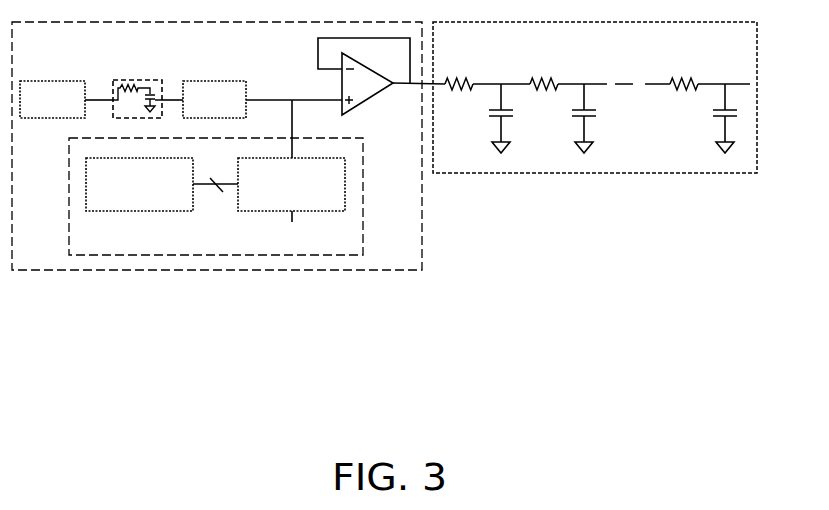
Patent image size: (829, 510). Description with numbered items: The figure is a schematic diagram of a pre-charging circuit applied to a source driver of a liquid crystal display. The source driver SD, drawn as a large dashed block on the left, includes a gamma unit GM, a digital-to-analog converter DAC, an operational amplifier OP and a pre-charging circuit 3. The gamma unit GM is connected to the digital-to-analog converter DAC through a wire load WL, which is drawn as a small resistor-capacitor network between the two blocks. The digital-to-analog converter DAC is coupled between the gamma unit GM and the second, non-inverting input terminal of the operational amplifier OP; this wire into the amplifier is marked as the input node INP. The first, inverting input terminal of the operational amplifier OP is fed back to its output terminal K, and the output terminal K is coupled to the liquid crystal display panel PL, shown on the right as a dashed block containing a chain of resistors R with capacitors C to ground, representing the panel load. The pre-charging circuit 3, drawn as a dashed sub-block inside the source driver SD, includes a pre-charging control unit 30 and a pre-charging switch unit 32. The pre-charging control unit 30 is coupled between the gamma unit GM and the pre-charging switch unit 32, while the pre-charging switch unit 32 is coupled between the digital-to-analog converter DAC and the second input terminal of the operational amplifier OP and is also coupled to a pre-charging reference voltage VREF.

The pre-charging circuit 3 is at (90, 248).
The pre-charging control unit 30 is at (148, 195).
The pre-charging switch unit 32 is at (303, 195).
The source driver SD is at (43, 45).
The liquid crystal display panel PL is at (463, 45).
The gamma unit GM is at (62, 107).
The wire load WL is at (128, 74).
The digital-to-analog converter DAC is at (228, 107).
The input node INP is at (300, 95).
The operational amplifier OP is at (372, 90).
The output terminal K is at (418, 93).
The pre-charging reference voltage VREF is at (292, 228).
The resistor R is at (571, 96).
The capacitor C is at (607, 118).